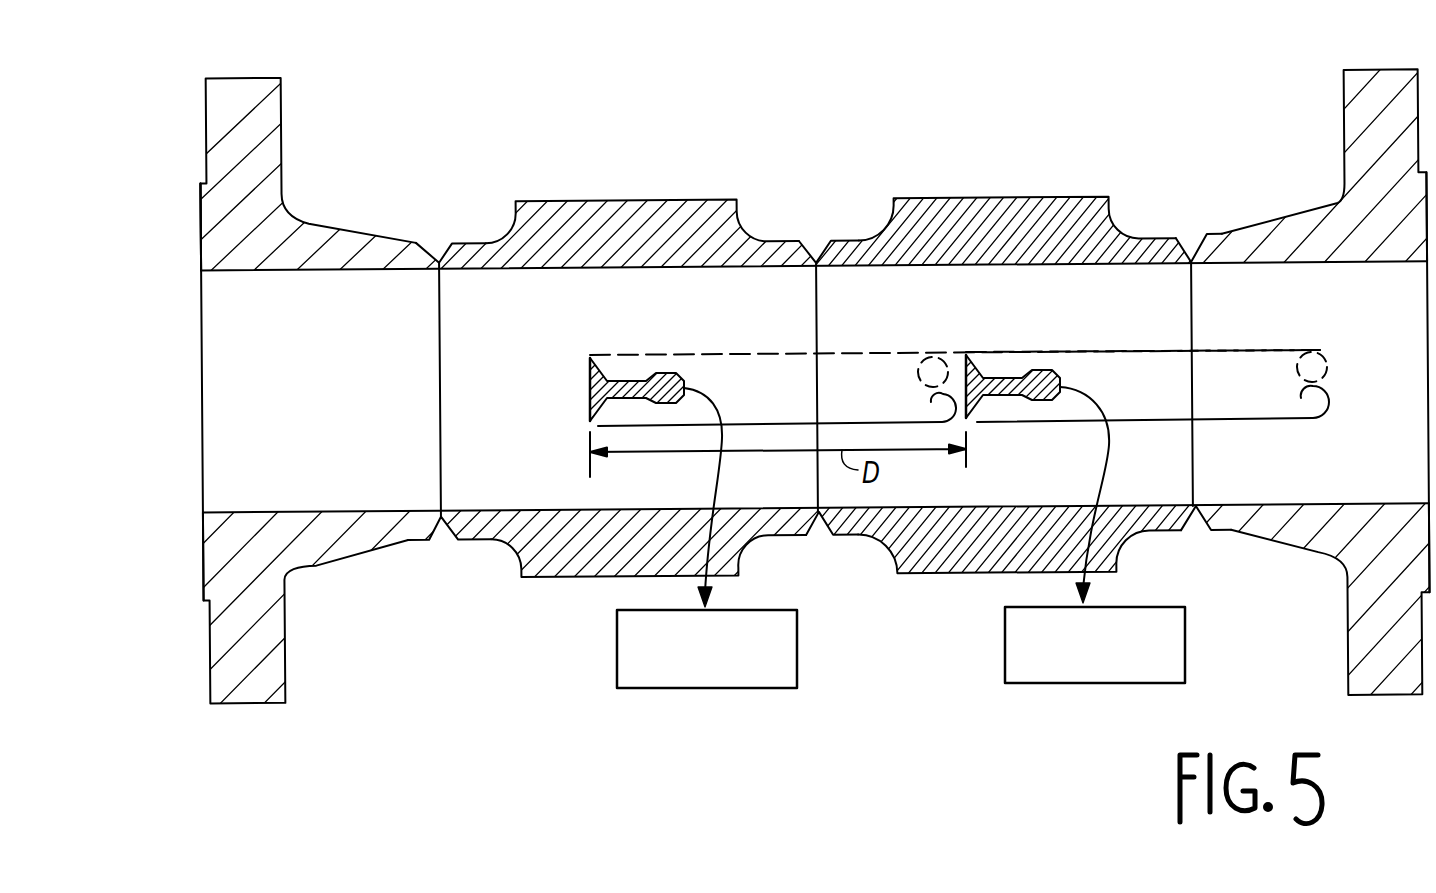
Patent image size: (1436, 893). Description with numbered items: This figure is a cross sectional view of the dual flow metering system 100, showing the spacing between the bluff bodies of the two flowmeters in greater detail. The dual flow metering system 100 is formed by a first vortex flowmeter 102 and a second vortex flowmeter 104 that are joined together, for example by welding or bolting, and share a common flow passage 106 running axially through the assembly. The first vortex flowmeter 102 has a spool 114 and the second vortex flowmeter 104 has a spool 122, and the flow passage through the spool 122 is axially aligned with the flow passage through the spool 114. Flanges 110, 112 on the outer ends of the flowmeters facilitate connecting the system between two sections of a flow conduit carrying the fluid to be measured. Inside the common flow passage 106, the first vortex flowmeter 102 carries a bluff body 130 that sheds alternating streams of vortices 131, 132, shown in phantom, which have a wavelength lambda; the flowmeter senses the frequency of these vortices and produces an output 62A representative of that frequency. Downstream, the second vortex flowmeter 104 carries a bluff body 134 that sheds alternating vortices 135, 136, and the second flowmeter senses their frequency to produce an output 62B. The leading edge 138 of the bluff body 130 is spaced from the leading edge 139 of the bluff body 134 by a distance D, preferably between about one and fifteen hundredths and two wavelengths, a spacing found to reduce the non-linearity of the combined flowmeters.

The dual flow metering system 100 is at (792, 110).
The first vortex flowmeter 102 is at (606, 192).
The second vortex flowmeter 104 is at (1035, 184).
The common flow passage 106 is at (236, 403).
The flange 110 is at (283, 131).
The flange 112 is at (1358, 125).
The spool 114 is at (500, 240).
The spool 122 is at (876, 238).
The bluff body 130 is at (600, 372).
The vortices 131 is at (788, 423).
The vortices 132 is at (763, 352).
The bluff body 134 is at (985, 364).
The vortices 135 is at (1165, 417).
The vortices 136 is at (1162, 350).
The leading edge 138 is at (590, 388).
The leading edge 139 is at (965, 365).
The output 62A is at (617, 655).
The output 62B is at (1005, 652).